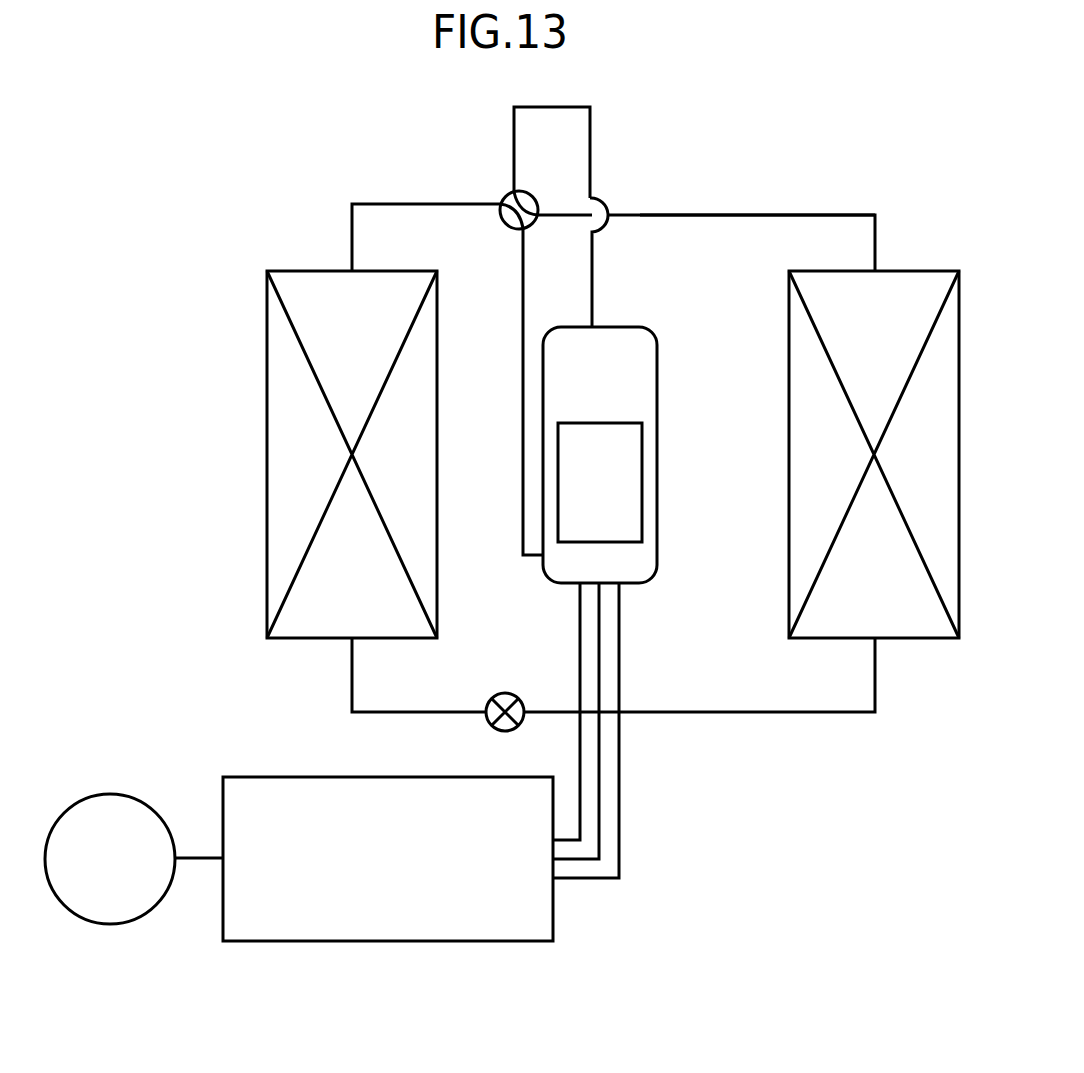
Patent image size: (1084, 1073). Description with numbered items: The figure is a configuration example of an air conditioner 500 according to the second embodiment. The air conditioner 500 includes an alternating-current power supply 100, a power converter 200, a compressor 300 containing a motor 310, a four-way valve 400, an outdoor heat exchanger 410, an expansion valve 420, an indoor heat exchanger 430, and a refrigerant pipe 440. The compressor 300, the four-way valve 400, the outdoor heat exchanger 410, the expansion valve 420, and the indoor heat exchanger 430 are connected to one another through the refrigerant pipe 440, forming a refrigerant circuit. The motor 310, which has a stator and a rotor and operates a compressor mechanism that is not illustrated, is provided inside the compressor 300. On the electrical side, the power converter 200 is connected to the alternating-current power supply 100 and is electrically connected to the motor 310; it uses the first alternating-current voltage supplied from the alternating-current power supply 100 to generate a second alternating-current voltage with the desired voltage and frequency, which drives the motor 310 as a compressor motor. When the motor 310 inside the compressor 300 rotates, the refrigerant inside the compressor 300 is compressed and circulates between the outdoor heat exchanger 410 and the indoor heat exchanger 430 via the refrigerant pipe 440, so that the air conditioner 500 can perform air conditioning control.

The alternating-current power supply 100 is at (113, 794).
The power converter 200 is at (281, 777).
The compressor 300 is at (631, 327).
The motor 310 is at (642, 450).
The four-way valve 400 is at (505, 196).
The outdoor heat exchanger 410 is at (293, 271).
The expansion valve 420 is at (507, 693).
The indoor heat exchanger 430 is at (929, 271).
The refrigerant pipe 440 is at (772, 215).
The air conditioner 500 is at (200, 185).